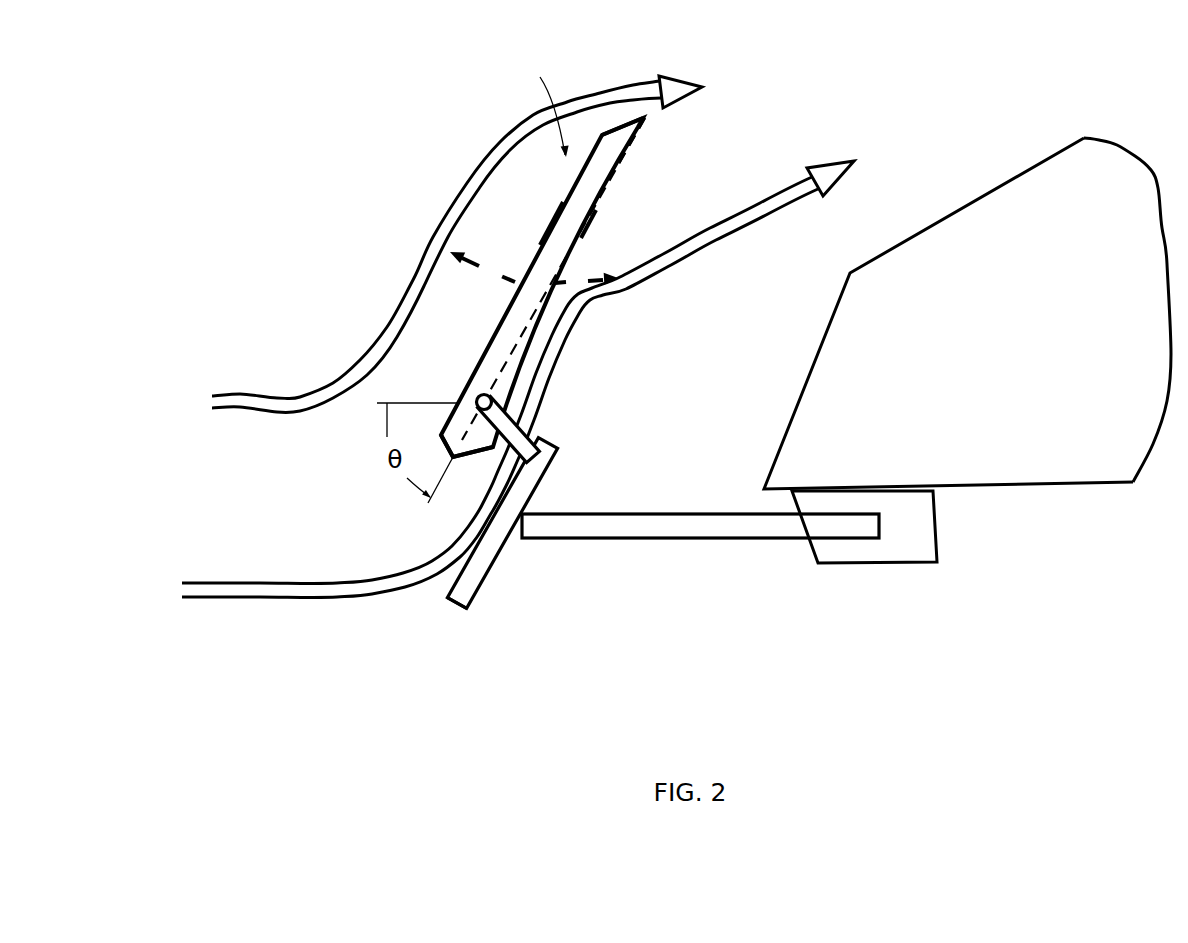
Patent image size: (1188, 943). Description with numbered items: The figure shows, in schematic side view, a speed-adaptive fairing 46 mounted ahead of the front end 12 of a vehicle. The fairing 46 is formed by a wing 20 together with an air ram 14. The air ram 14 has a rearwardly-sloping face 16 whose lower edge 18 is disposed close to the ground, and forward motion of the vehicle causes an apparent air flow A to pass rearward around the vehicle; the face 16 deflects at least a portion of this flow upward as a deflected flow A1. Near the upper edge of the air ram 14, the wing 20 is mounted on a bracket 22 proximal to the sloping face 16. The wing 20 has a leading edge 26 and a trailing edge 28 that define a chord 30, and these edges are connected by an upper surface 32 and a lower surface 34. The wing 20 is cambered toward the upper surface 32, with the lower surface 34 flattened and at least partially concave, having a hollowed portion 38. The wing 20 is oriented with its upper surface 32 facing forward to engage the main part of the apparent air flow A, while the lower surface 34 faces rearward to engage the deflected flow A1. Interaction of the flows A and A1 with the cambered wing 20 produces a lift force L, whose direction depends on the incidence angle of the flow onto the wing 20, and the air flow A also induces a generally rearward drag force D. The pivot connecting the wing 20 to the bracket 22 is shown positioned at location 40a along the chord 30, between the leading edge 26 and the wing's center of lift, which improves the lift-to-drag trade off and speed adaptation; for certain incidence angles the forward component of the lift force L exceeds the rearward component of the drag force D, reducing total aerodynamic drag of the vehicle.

The front end 12 is at (887, 326).
The air ram 14 is at (487, 580).
The rearwardly-sloping face 16 is at (455, 583).
The lower edge 18 is at (466, 612).
The wing 20 is at (553, 247).
The bracket 22 is at (527, 438).
The leading edge 26 is at (459, 460).
The trailing edge 28 is at (656, 122).
The chord 30 is at (617, 205).
The upper surface 32 is at (563, 202).
The lower surface 34 is at (585, 222).
The hollowed portion 38 is at (613, 165).
The pivot location 40a is at (484, 393).
The speed-adaptive fairing 46 is at (540, 105).
The apparent air flow A is at (420, 258).
The deflected flow A1 is at (258, 598).
The lift force L is at (482, 268).
The drag force D is at (586, 282).